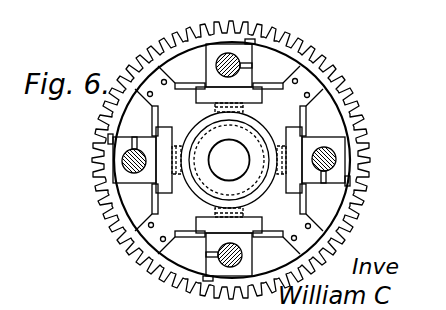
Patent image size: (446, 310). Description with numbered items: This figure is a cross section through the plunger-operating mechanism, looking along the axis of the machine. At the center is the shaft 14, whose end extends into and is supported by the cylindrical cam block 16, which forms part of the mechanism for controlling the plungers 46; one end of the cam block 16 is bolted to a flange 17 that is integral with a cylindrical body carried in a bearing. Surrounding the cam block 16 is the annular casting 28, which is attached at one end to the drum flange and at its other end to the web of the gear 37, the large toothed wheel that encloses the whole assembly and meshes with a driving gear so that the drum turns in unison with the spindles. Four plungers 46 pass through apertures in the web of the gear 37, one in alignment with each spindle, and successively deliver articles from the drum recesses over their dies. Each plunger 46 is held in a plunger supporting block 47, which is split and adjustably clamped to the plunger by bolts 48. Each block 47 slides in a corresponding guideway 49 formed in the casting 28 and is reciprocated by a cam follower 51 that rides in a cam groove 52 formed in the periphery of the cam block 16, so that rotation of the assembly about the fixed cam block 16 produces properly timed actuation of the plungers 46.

The shaft 14 is at (229, 160).
The cylindrical cam block 16 is at (206, 177).
The flange 17 is at (229, 160).
The annular casting 28 is at (290, 115).
The gear 37 is at (371, 158).
The plungers 46 is at (226, 52).
The plunger supporting blocks 47 is at (211, 40).
The bolts 48 is at (246, 41).
The guideway 49 is at (251, 97).
The cam follower 51 is at (215, 116).
The cam groove 52 is at (251, 134).